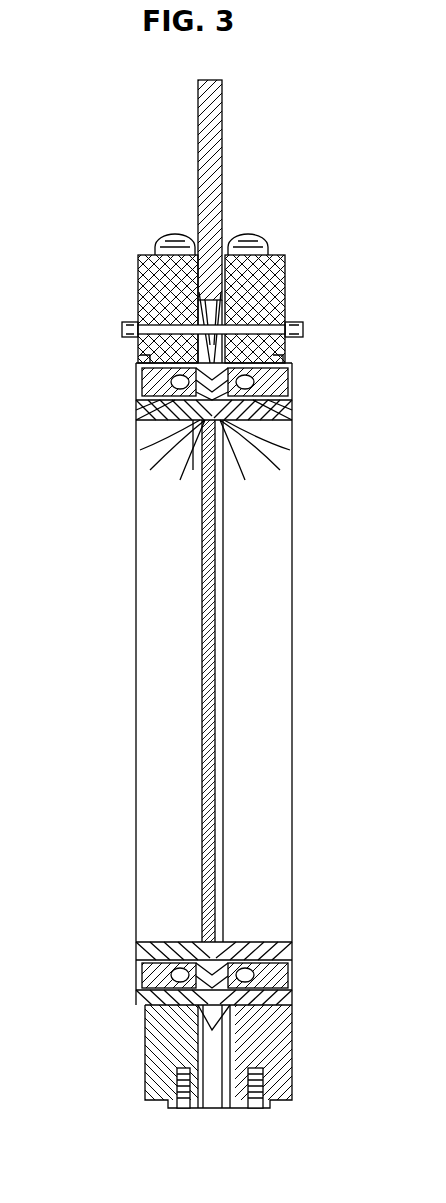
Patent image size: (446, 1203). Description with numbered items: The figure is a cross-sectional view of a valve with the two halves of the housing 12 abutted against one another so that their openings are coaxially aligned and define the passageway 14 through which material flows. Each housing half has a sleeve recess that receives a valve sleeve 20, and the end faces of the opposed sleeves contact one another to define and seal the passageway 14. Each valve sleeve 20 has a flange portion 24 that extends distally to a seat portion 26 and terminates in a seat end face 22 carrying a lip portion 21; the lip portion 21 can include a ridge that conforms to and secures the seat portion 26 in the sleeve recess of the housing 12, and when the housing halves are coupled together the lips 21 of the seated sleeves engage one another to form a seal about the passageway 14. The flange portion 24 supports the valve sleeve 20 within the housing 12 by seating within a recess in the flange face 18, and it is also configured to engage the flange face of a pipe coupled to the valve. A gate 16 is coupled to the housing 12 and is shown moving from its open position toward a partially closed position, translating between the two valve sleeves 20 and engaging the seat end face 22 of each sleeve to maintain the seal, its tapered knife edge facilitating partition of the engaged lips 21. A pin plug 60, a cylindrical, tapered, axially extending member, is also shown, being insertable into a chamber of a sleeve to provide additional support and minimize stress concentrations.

The housing 12 is at (175, 1106).
The passageway 14 is at (304, 598).
The gate 16 is at (222, 132).
The flange face 18 is at (294, 1030).
The valve sleeve 20 is at (138, 361).
The lip portion 21 is at (268, 424).
The seat end face 22 is at (228, 352).
The flange portion 24 is at (292, 1005).
The seat portion 26 is at (262, 948).
The pin plug 60 is at (150, 392).